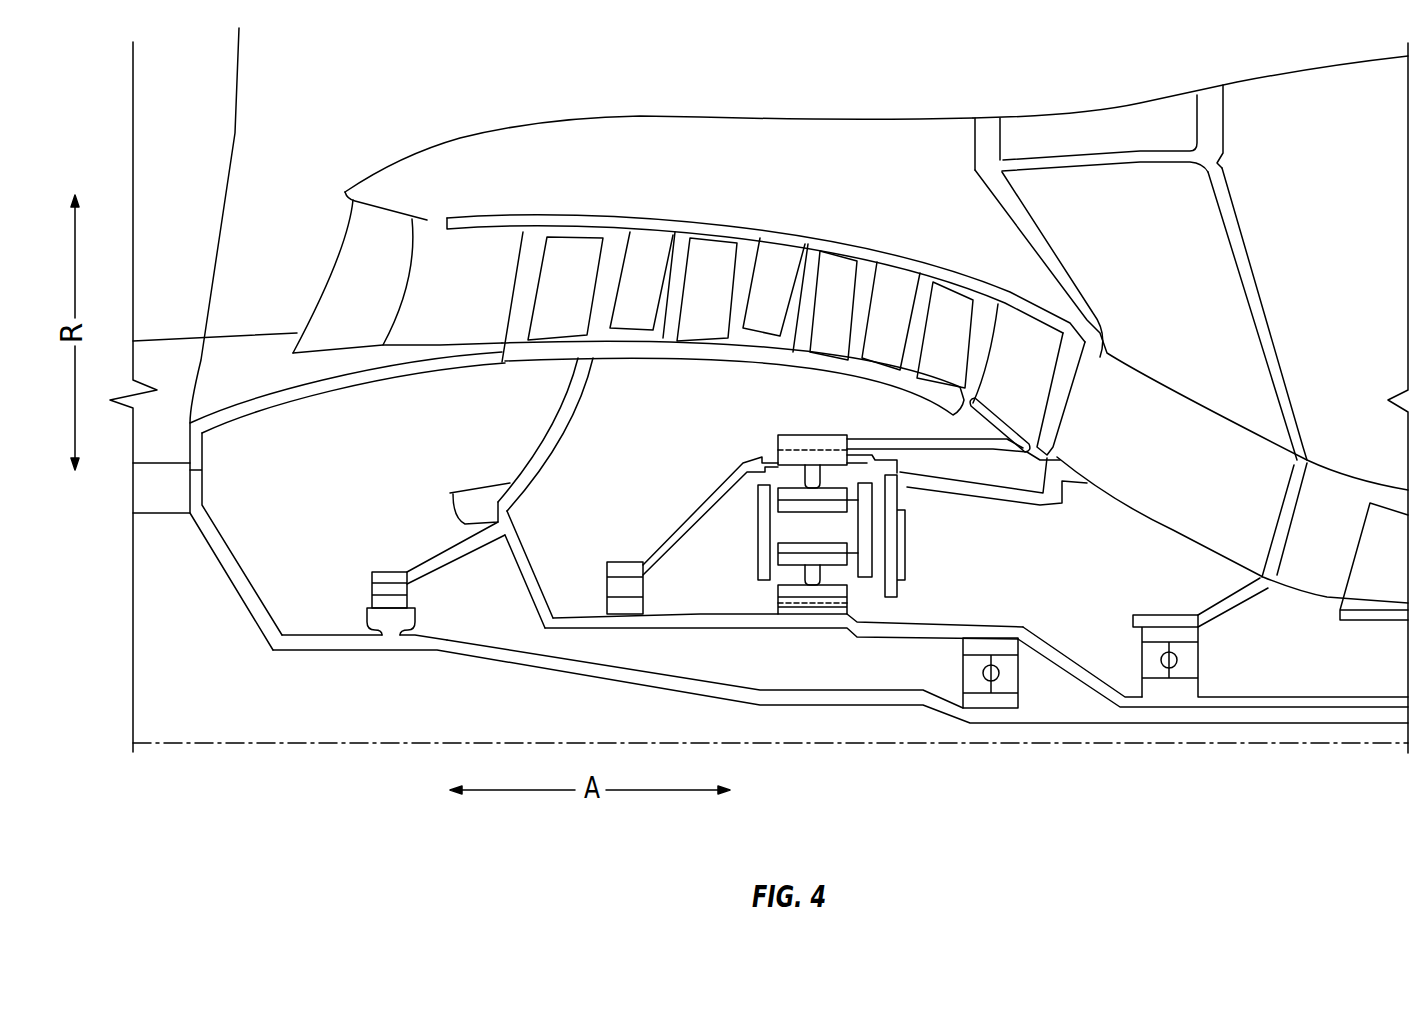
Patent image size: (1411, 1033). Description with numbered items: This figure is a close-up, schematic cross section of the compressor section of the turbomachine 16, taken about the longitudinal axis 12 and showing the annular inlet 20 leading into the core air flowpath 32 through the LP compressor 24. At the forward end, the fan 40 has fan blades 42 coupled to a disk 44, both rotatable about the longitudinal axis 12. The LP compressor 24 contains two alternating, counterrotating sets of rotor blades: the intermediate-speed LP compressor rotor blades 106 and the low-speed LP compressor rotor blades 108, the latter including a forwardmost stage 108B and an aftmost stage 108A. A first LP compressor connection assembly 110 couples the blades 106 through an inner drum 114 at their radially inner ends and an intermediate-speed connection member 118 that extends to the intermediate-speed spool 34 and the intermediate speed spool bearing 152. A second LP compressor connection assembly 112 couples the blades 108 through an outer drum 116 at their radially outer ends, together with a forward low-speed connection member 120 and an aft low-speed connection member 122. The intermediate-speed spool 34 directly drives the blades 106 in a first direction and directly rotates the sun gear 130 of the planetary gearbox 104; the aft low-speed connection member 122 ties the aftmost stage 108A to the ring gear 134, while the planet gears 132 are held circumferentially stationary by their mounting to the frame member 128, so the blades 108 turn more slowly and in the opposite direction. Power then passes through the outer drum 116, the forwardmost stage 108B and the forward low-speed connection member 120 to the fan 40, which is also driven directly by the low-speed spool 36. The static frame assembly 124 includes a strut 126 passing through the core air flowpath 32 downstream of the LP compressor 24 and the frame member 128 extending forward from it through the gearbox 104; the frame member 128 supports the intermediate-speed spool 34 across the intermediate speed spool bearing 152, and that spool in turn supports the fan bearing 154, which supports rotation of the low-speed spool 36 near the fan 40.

The longitudinal axis 12 is at (1153, 743).
The turbomachine 16 is at (931, 65).
The annular inlet 20 is at (322, 238).
The low pressure (LP) compressor 24 is at (690, 178).
The core air flowpath 32 is at (1110, 401).
The intermediate-speed spool 34 is at (1047, 643).
The low-speed spool 36 is at (793, 697).
The fan 40 is at (213, 157).
The fan blades 42 is at (234, 137).
The disk 44 is at (157, 490).
The gearbox 104 is at (724, 511).
The intermediate-speed LP compressor rotor blades 106 is at (705, 258).
The low-speed LP compressor rotor blades 108 is at (780, 268).
The aftmost stage of low-speed LP compressor rotor blades 108A is at (1044, 386).
The forwardmost stage of low-speed LP compressor rotor blades 108B is at (494, 306).
The first LP compressor connection assembly 110 is at (527, 405).
The second LP compressor connection assembly 112 is at (594, 178).
The inner drum 114 is at (652, 357).
The outer drum 116 is at (767, 223).
The intermediate-speed connection member 118 is at (450, 494).
The forward low-speed connection member 120 is at (290, 392).
The aft low-speed connection member 122 is at (900, 439).
The frame assembly 124 is at (1302, 186).
The strut 126 is at (1173, 467).
The frame member 128 is at (746, 449).
The sun gear 130 is at (818, 612).
The planet gear 132 is at (805, 572).
The ring gear 134 is at (817, 443).
The intermediate speed spool bearing 152 is at (607, 587).
The fan bearing 154 is at (372, 583).